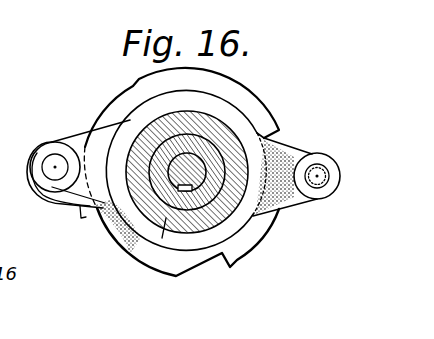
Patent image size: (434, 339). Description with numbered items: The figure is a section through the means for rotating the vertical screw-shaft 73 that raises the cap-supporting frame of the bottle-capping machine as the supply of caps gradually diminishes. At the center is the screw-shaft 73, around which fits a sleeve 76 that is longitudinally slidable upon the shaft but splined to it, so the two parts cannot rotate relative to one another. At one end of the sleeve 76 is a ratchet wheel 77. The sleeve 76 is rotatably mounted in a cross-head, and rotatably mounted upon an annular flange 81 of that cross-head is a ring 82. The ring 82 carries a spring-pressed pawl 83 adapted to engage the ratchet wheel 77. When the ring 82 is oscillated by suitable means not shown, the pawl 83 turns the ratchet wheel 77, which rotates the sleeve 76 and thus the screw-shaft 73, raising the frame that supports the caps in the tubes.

The ring 82 is at (157, 113).
The sleeve 76 is at (158, 147).
The screw-shaft 73 is at (182, 181).
The annular flange 81 is at (162, 238).
The ratchet wheel 77 is at (242, 248).
The spring-pressed pawl 83 is at (90, 208).